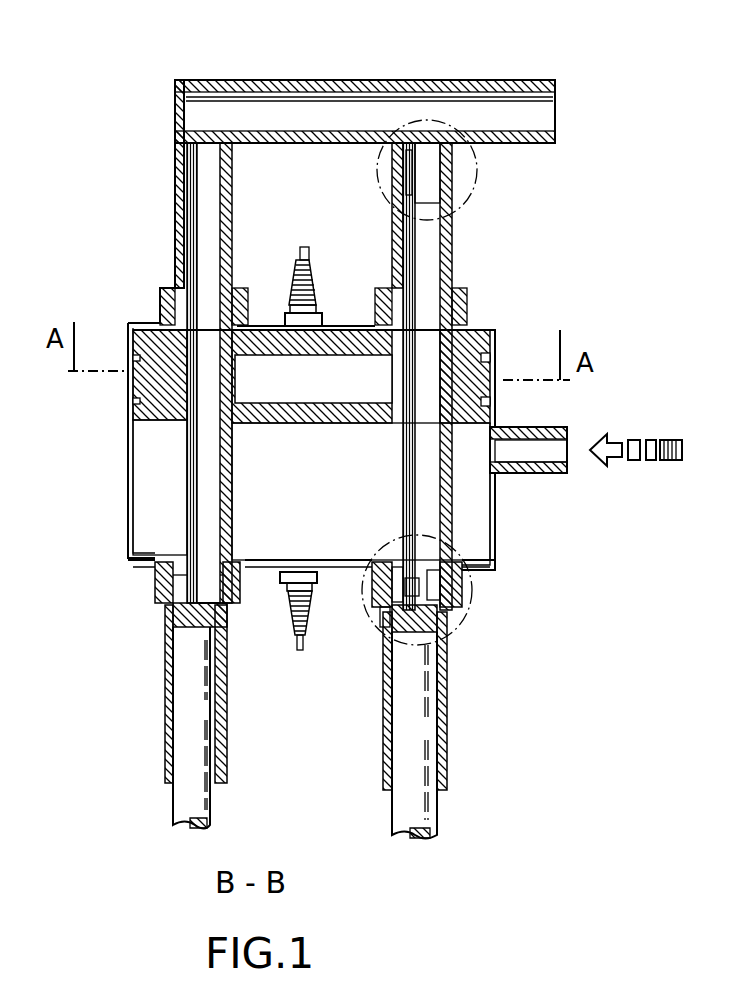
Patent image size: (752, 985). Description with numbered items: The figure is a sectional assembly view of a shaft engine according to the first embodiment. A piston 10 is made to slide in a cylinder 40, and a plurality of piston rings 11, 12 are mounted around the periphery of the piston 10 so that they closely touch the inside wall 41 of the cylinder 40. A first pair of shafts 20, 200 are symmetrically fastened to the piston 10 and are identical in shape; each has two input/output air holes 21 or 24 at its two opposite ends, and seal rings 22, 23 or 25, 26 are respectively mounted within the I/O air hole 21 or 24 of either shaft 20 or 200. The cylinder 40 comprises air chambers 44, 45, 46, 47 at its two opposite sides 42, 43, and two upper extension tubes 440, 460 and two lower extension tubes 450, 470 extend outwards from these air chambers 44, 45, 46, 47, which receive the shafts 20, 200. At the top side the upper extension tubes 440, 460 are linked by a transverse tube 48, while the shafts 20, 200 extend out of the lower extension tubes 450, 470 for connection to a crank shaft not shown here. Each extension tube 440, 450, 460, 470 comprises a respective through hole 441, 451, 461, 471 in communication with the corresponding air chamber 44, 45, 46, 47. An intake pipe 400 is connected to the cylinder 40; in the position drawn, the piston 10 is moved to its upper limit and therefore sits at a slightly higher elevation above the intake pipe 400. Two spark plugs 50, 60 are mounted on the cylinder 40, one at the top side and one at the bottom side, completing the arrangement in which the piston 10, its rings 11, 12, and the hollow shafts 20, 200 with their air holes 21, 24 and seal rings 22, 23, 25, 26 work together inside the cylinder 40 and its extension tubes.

The transverse tube 48 is at (332, 82).
The seal ring 22 is at (452, 128).
The I/O air hole 21 is at (443, 163).
The seal ring 23 is at (445, 192).
The upper extension tube 460 is at (177, 188).
The air chamber 46 is at (162, 292).
The through hole 461 is at (160, 302).
The upper extension tube 440 is at (453, 245).
The air chamber 44 is at (455, 302).
The through hole 441 is at (467, 320).
The side of cylinder 42 is at (270, 325).
The spark plug 50 is at (311, 292).
The piston ring 11 is at (487, 360).
The piston ring 12 is at (487, 405).
The shaft 200 is at (170, 492).
The shaft 20 is at (443, 490).
The piston 10 is at (497, 466).
The intake pipe 400 is at (560, 475).
The inside wall 41 is at (128, 522).
The cylinder 40 is at (497, 562).
The side of cylinder 43 is at (258, 565).
The spark plug 60 is at (307, 637).
The through hole 471 is at (152, 577).
The air chamber 47 is at (160, 612).
The lower extension tube 470 is at (166, 737).
The air chamber 45 is at (385, 613).
The through hole 451 is at (457, 582).
The seal ring 25 is at (470, 550).
The seal ring 26 is at (455, 603).
The I/O air hole 24 is at (447, 640).
The lower extension tube 450 is at (442, 737).